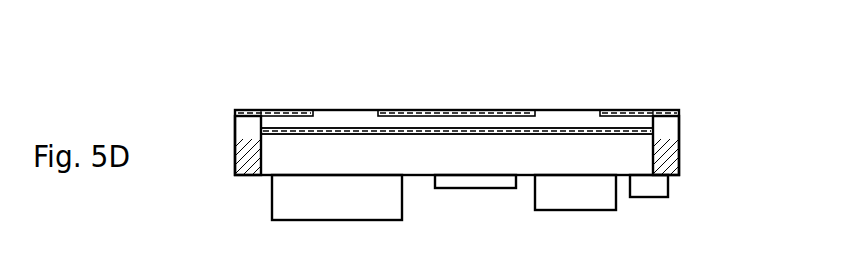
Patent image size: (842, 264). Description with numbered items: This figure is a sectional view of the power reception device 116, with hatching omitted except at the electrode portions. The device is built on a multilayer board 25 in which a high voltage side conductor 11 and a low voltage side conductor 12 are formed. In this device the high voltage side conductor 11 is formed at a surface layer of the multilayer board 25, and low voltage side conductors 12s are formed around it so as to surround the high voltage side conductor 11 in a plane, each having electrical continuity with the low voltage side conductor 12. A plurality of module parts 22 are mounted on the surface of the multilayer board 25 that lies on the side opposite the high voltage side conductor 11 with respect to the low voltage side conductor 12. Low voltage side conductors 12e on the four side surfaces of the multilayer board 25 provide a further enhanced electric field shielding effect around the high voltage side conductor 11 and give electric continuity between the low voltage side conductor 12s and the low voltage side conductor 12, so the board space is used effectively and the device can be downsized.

The power reception device 116 is at (783, 109).
The high voltage side conductor 11 is at (463, 110).
The low voltage side conductor 12 is at (570, 130).
The low voltage side conductor 12s is at (280, 110).
The low voltage side conductor 12e is at (672, 140).
The module part 22 is at (478, 186).
The multilayer board 25 is at (642, 161).